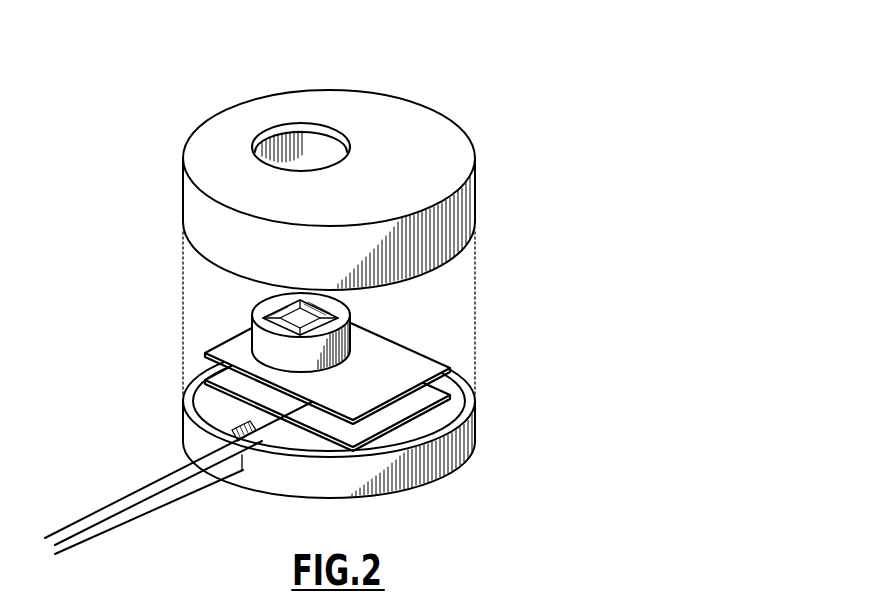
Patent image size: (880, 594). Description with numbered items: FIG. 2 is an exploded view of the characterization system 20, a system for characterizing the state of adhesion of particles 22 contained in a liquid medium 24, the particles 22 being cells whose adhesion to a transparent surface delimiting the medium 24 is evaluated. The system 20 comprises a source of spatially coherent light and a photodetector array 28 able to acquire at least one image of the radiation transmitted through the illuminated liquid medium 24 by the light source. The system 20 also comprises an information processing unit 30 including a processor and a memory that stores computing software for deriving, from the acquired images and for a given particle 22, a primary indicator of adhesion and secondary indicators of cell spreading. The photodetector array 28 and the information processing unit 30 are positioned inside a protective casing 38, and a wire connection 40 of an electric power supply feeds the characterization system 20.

The characterization system 20 is at (317, 296).
The protective casing 38 is at (532, 198).
The particles 22 is at (262, 311).
The liquid medium 24 is at (322, 309).
The photodetector array 28 is at (362, 358).
The information processing unit 30 is at (405, 407).
The wire connection 40 is at (110, 522).